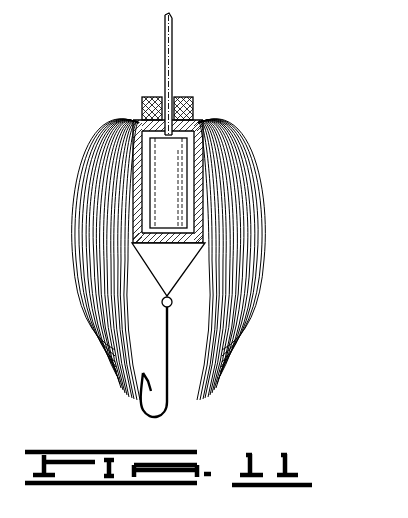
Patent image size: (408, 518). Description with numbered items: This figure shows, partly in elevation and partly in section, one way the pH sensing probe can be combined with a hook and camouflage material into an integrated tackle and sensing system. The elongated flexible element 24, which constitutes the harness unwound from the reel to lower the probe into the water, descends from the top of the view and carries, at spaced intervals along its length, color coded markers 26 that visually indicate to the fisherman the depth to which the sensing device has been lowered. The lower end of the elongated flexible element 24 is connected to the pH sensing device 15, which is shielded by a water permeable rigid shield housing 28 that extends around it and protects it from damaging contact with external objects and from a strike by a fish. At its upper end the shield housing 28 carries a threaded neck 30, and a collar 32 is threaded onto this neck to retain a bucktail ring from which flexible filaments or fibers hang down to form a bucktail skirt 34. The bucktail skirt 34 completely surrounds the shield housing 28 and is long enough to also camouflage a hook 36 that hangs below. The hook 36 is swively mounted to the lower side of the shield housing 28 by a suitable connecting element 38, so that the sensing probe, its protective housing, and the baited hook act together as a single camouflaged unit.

The pH sensing device 15 is at (176, 176).
The elongated flexible element 24 is at (167, 43).
The color coded markers 26 is at (170, 78).
The shield housing 28 is at (134, 152).
The threaded neck 30 is at (176, 97).
The collar 32 is at (143, 100).
The bucktail skirt 34 is at (232, 187).
The hook 36 is at (170, 408).
The connecting element 38 is at (175, 270).